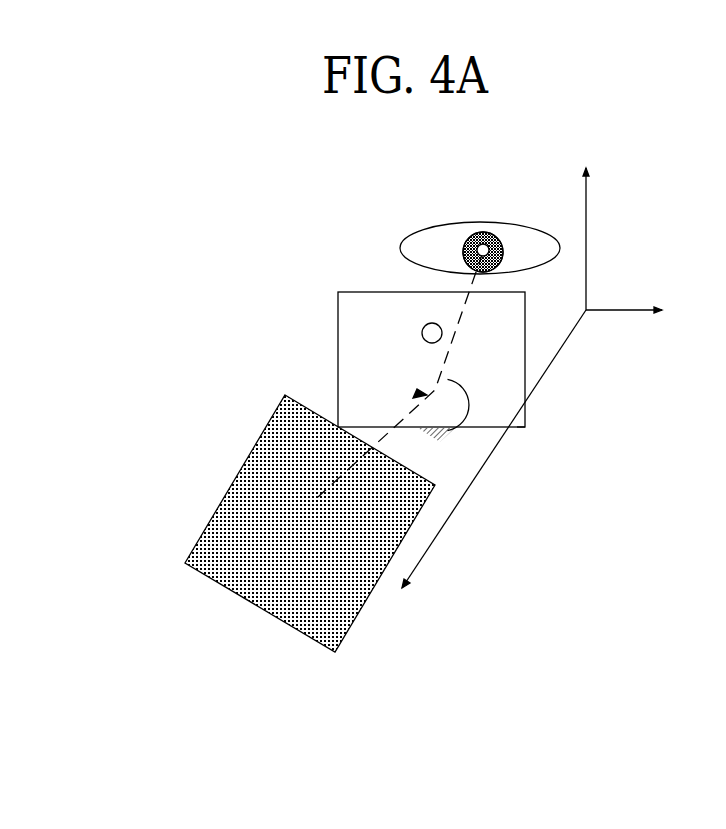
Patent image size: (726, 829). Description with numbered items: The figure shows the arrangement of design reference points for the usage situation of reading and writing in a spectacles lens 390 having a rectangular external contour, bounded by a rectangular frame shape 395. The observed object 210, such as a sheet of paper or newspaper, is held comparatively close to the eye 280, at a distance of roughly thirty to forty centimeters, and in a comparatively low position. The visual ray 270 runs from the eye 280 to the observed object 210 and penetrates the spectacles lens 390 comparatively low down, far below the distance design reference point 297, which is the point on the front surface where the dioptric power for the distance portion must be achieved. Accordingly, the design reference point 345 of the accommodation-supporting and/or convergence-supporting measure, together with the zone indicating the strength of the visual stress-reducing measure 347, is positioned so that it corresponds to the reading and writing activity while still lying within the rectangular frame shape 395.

The observed object 210 is at (267, 613).
The visual ray 270 is at (474, 279).
The eye 280 is at (479, 222).
The distance design reference point 297 is at (422, 334).
The design reference point 345 is at (427, 395).
The strength of the visual stress-reducing measure 347 is at (466, 388).
The spectacles lens 390 is at (361, 303).
The rectangular frame shape 395 is at (517, 428).